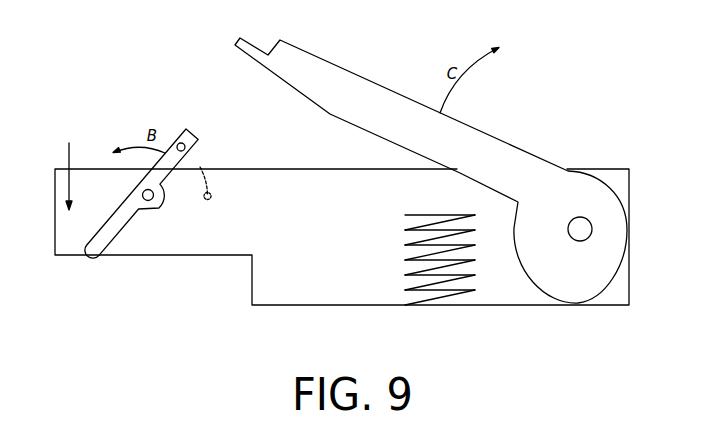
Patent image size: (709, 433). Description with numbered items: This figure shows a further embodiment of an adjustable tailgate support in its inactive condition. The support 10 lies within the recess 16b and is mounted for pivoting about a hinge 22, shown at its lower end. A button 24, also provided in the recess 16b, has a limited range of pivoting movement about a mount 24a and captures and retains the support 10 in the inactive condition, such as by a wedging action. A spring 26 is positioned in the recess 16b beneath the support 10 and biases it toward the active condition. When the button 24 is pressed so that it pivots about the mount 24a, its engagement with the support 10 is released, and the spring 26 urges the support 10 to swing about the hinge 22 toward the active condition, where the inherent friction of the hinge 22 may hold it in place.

The support 10 is at (507, 163).
The recess 16b is at (636, 290).
The hinge 22 is at (580, 242).
The button 24 is at (188, 130).
The mount 24a is at (152, 210).
The spring 26 is at (442, 293).